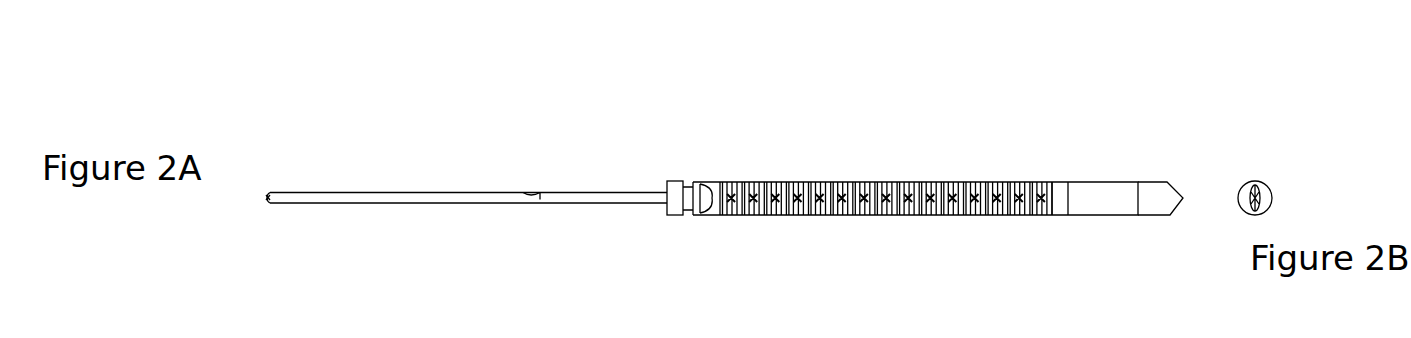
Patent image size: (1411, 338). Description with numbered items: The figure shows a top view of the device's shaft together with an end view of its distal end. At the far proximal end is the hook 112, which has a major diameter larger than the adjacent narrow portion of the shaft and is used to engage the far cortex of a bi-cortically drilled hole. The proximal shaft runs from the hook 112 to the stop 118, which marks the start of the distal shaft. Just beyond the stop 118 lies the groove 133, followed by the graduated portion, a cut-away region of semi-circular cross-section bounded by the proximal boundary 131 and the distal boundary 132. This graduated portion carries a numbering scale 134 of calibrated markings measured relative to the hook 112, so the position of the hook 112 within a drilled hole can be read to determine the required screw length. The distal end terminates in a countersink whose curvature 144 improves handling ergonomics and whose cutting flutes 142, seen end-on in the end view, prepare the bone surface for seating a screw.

In FIG. 2A, the hook 112 is at (255, 208).
In FIG. 2A, the stop 118 is at (669, 181).
In FIG. 2A, the proximal boundary 131 is at (706, 162).
In FIG. 2A, the distal boundary 132 is at (1052, 170).
In FIG. 2A, the groove 133 is at (687, 187).
In FIG. 2A, the numbering scale 134 is at (864, 176).
In FIG. 2A, the cutting flutes 142 is at (1176, 187).
In FIG. 2B, the cutting flutes 142 is at (1263, 196).
In FIG. 2A, the curvature 144 is at (1106, 182).